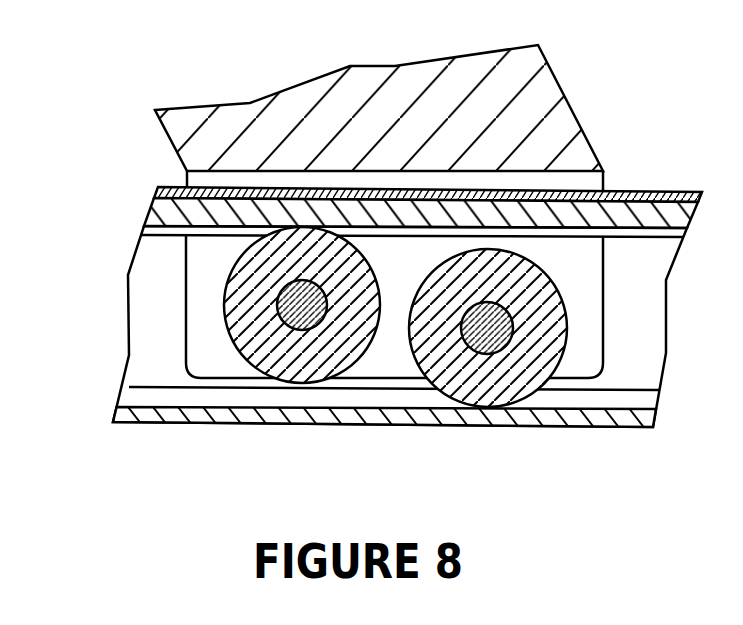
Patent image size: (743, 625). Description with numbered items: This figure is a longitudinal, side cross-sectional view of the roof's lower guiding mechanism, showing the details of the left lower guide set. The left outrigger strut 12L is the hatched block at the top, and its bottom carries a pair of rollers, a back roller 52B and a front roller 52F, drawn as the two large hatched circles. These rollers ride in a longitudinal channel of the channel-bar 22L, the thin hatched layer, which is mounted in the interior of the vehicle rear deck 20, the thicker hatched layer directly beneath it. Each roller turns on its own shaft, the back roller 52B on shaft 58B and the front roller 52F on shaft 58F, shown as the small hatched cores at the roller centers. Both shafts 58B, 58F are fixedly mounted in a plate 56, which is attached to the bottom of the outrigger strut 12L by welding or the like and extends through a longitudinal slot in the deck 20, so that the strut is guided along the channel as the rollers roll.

The left outrigger strut 12L is at (232, 120).
The channel-bar 22L is at (662, 208).
The vehicle rear deck 20 is at (625, 193).
The plate 56 is at (393, 358).
The front roller 52F is at (243, 317).
The front shaft 58F is at (312, 338).
The back roller 52B is at (443, 380).
The back shaft 58B is at (484, 337).